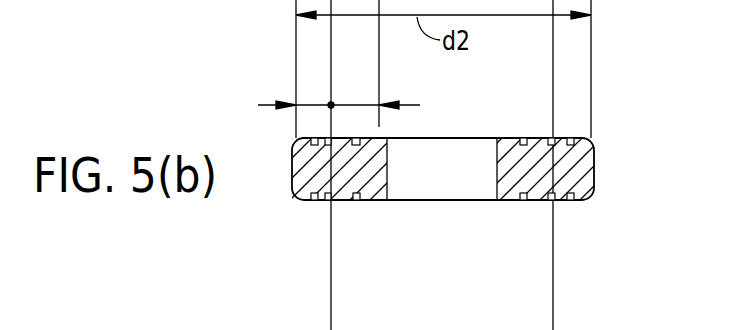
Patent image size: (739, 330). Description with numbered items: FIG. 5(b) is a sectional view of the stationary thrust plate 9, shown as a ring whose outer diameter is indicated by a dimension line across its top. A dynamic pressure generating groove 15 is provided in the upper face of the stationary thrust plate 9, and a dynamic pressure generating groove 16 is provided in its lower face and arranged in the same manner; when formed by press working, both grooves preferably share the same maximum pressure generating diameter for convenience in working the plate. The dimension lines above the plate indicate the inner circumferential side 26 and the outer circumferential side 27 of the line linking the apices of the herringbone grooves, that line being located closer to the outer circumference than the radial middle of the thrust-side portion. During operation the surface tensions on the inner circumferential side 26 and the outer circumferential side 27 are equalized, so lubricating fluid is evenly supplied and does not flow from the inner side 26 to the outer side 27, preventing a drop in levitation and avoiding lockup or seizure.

The stationary thrust plate 9 is at (289, 198).
The dynamic pressure generating groove 15 is at (571, 138).
The dynamic pressure generating groove 16 is at (570, 200).
The inner circumferential side 26 is at (357, 100).
The outer circumferential side 27 is at (312, 103).